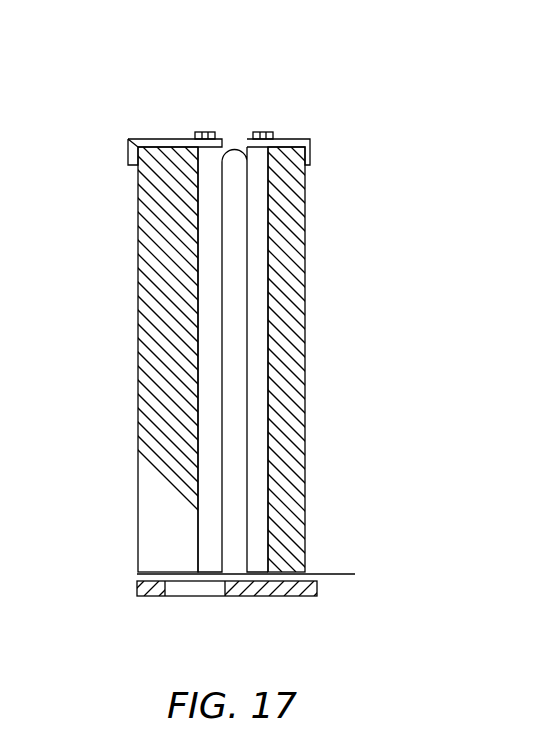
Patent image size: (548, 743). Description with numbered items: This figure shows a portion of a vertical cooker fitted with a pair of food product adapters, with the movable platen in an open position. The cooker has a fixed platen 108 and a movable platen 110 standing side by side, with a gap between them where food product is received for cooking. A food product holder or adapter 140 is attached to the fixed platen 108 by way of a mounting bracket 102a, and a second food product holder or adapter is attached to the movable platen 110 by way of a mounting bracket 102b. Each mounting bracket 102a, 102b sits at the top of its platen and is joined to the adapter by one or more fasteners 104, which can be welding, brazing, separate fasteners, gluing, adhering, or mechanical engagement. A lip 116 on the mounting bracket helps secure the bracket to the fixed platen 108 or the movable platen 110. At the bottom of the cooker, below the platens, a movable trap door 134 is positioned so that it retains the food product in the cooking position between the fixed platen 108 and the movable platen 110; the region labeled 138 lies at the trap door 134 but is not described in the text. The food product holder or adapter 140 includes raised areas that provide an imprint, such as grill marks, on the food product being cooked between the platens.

The mounting bracket 102a is at (140, 139).
The mounting bracket 102b is at (292, 139).
The fasteners 104 is at (262, 132).
The fixed platen 108 is at (145, 227).
The movable platen 110 is at (288, 385).
The lip 116 is at (128, 151).
The trap door 134 is at (283, 596).
The base plate opening 138 is at (198, 585).
The food product holder or adapter 140 is at (212, 401).